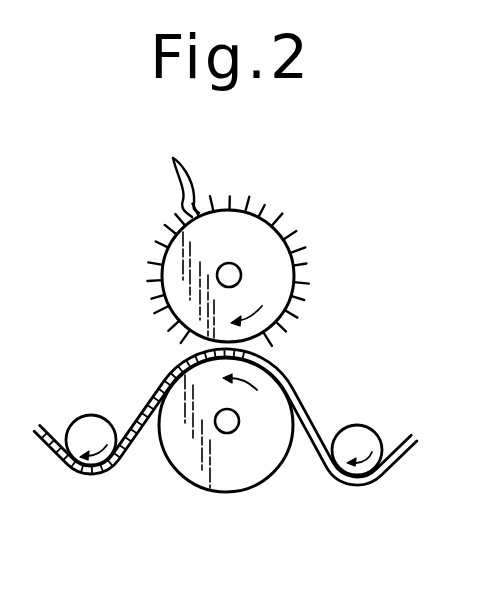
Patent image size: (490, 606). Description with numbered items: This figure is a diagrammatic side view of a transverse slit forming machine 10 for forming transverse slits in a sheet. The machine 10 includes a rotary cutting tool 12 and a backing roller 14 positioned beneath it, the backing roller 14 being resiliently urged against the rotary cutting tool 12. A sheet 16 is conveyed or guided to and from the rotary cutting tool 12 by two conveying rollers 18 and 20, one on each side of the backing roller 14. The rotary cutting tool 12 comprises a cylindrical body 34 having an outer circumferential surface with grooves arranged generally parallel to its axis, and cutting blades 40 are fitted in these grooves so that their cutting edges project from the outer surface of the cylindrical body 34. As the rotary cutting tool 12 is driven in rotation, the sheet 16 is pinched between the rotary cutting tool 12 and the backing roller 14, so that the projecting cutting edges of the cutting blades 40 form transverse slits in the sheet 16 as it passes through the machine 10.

The transverse slit forming machine 10 is at (386, 177).
The rotary cutting tool 12 is at (270, 259).
The backing roller 14 is at (272, 474).
The sheet 16 is at (302, 404).
The conveying roller 18 is at (368, 425).
The conveying roller 20 is at (93, 466).
The cylindrical body 34 is at (262, 275).
The cutting blades 40 is at (175, 169).